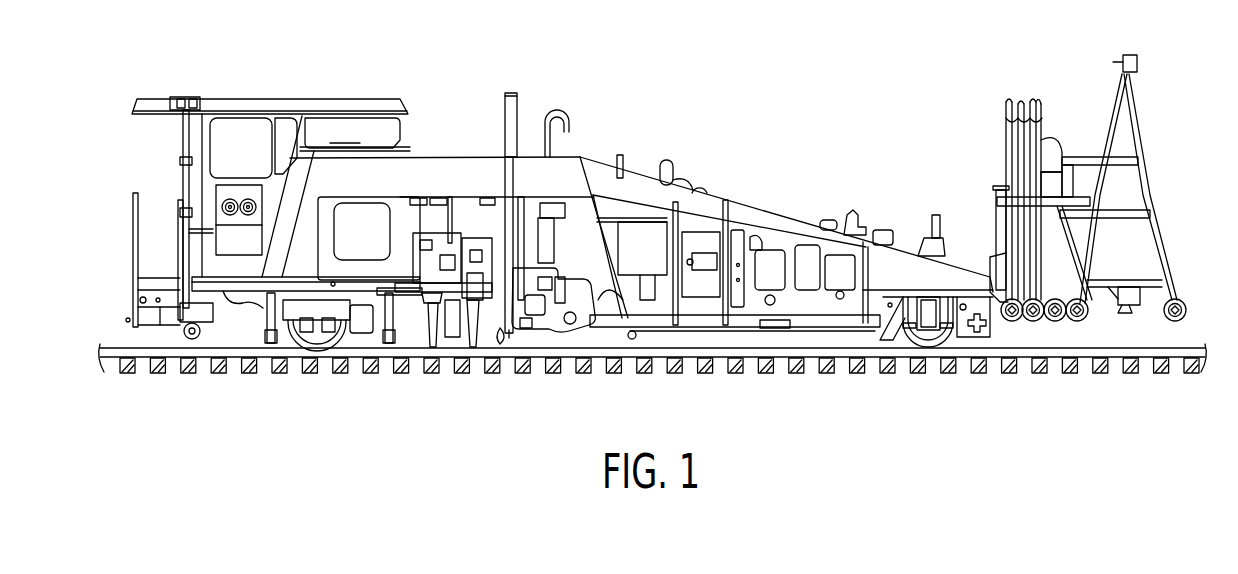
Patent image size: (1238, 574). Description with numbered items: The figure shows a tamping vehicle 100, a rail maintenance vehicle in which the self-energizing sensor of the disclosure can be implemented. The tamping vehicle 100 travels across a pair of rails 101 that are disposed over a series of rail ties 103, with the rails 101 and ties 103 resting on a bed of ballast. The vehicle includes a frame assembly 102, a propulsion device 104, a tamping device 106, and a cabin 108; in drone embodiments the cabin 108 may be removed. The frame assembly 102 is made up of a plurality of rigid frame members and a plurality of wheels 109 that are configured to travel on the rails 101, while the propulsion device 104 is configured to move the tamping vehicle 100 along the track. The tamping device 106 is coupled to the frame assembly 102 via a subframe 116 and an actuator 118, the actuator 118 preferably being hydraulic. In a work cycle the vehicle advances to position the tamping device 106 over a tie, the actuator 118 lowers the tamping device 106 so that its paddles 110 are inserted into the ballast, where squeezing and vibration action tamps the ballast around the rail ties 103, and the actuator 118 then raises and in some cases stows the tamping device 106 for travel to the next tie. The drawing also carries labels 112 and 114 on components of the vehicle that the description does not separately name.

The tamping vehicle 100 is at (279, 69).
The rails 101 is at (142, 355).
The frame assembly 102 is at (595, 178).
The rail ties 103 is at (226, 372).
The propulsion device 104 is at (738, 230).
The tamping device 106 is at (483, 341).
The cabin 108 is at (303, 118).
The wheels 109 is at (964, 346).
The paddles 110 is at (430, 332).
The rear wheel truck 112 is at (892, 348).
The hydraulic cylinder 114 is at (480, 270).
The subframe 116 is at (461, 200).
The actuator 118 is at (457, 240).